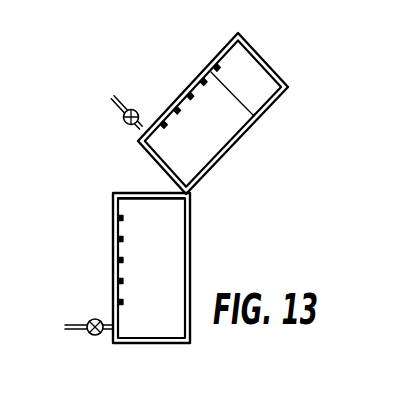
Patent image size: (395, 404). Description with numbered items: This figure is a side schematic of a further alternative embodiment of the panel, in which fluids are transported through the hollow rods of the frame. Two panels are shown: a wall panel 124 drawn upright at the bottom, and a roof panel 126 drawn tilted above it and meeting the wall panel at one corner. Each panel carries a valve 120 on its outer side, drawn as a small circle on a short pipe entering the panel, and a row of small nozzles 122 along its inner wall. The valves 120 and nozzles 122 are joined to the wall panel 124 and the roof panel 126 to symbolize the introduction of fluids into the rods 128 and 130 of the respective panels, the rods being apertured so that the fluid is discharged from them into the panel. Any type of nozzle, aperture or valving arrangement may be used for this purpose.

The valve 120 is at (138, 109).
The nozzle 122 is at (219, 66).
The wall panel 124 is at (172, 263).
The roof panel 126 is at (213, 144).
The rod 128 is at (120, 212).
The rod 130 is at (254, 116).